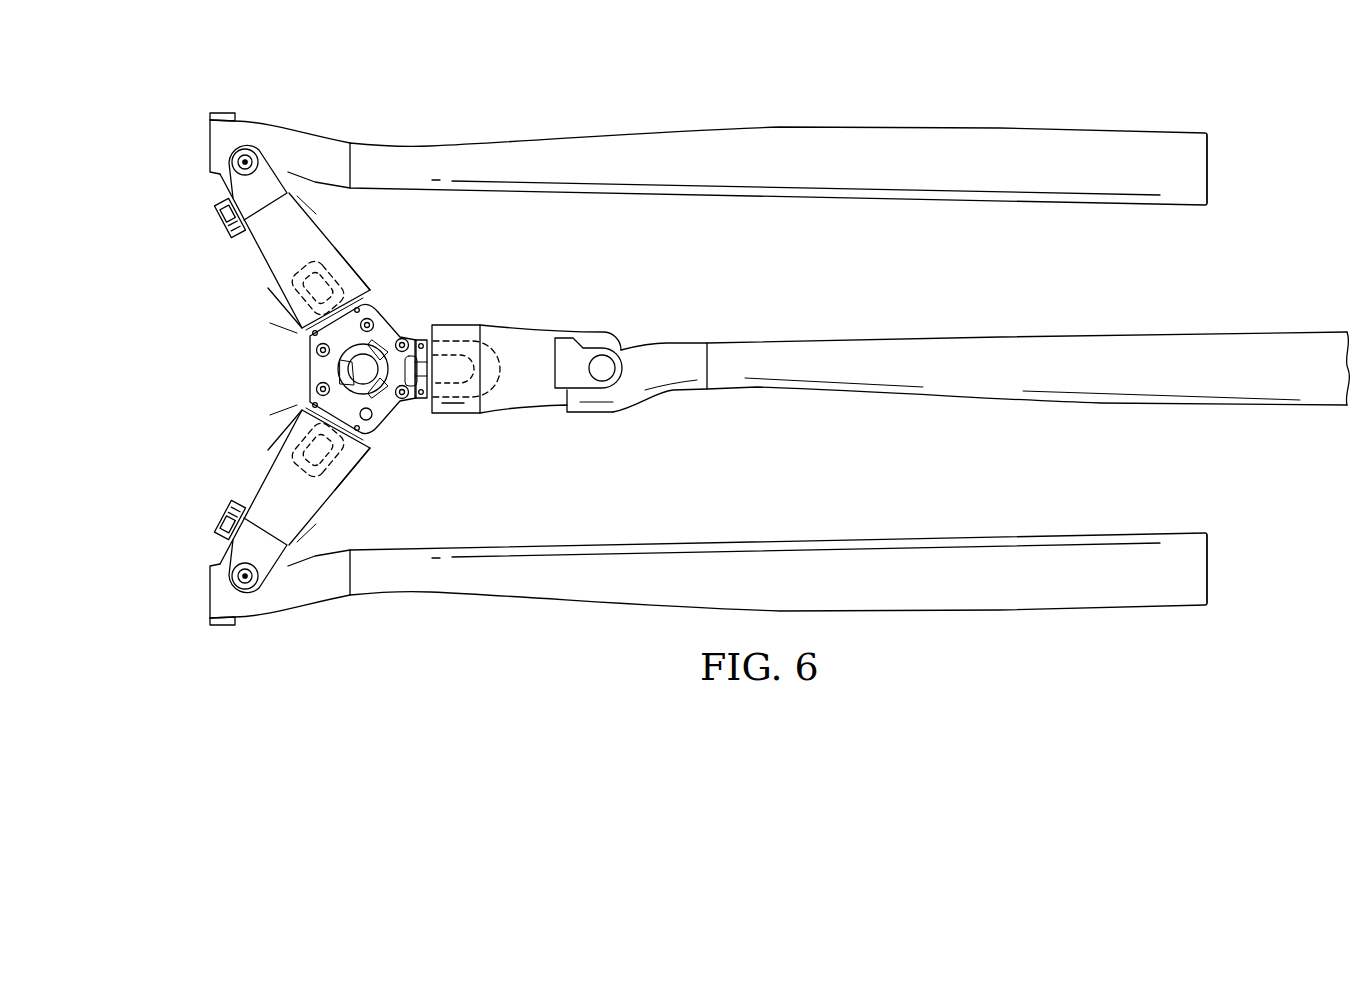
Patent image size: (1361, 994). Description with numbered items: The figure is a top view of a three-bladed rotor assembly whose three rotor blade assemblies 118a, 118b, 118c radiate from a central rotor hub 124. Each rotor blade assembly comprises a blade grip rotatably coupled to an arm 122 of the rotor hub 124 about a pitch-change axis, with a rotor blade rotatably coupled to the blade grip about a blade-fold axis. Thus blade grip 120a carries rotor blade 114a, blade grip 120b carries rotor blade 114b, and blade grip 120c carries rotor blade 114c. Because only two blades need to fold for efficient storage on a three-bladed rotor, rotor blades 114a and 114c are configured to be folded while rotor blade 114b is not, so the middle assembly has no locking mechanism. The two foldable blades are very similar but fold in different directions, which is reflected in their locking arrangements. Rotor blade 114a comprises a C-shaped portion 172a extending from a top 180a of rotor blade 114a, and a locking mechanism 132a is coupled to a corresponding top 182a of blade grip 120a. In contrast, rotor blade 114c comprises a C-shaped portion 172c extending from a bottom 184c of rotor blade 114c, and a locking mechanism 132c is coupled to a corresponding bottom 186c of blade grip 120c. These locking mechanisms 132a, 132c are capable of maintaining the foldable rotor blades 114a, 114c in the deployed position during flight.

The rotor blade 114a is at (1034, 608).
The rotor blade 114b is at (1218, 332).
The rotor blade 114c is at (952, 126).
The rotor blade assembly 118a is at (530, 602).
The rotor blade assembly 118b is at (871, 339).
The rotor blade assembly 118c is at (540, 136).
The blade grip 120a is at (268, 470).
The blade grip 120b is at (516, 410).
The blade grip 120c is at (268, 268).
The arm 122 is at (290, 422).
The rotor hub 124 is at (403, 330).
The locking mechanism 132a is at (205, 505).
The locking mechanism 132c is at (205, 233).
The C-shaped portion 172a is at (207, 602).
The C-shaped portion 172c is at (207, 137).
The top 180a is at (257, 622).
The top 182a is at (363, 470).
The bottom 184c is at (251, 112).
The bottom 186c is at (363, 271).